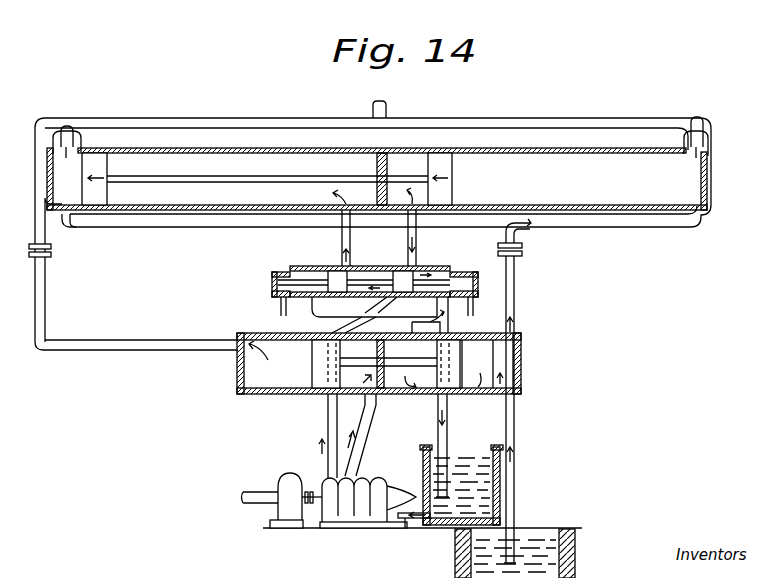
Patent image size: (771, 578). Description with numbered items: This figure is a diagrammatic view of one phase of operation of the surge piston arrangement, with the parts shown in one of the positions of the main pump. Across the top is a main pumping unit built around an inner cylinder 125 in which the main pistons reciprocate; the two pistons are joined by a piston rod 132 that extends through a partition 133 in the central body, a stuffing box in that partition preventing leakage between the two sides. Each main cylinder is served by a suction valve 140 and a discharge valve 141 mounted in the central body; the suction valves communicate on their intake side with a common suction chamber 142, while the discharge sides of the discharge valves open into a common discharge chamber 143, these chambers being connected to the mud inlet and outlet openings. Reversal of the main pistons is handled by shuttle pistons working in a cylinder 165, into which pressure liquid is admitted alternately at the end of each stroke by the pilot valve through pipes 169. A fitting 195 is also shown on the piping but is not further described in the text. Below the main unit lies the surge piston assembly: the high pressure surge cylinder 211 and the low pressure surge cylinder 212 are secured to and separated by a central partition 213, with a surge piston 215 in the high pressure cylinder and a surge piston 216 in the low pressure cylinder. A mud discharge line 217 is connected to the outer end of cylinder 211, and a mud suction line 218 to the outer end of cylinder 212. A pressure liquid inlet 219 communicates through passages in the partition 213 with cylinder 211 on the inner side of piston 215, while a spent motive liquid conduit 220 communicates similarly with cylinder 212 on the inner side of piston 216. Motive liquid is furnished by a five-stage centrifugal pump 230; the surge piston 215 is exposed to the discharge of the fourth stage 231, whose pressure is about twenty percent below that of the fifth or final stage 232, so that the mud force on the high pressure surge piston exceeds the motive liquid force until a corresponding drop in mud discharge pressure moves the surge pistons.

The inner cylinder 125 is at (224, 153).
The piston rod 132 is at (310, 176).
The partition 133 is at (392, 152).
The suction valve 140 is at (60, 200).
The discharge valve 141 is at (78, 140).
The suction chamber 142 is at (522, 237).
The discharge chamber 143 is at (67, 127).
The shuttle piston cylinder 165 is at (283, 268).
The pipe 169 is at (281, 300).
The pipe union 195 is at (47, 240).
The high pressure surge cylinder 211 is at (256, 345).
The low pressure surge cylinder 212 is at (494, 340).
The central partition 213 is at (410, 394).
The surge piston 215 is at (318, 394).
The surge piston 216 is at (480, 394).
The mud discharge line 217 is at (146, 343).
The mud suction line 218 is at (514, 283).
The pressure liquid inlet 219 is at (357, 435).
The spent motive liquid conduit 220 is at (412, 330).
The five-stage centrifugal pump 230 is at (367, 539).
The fourth stage 231 is at (358, 478).
The fifth stage 232 is at (330, 476).